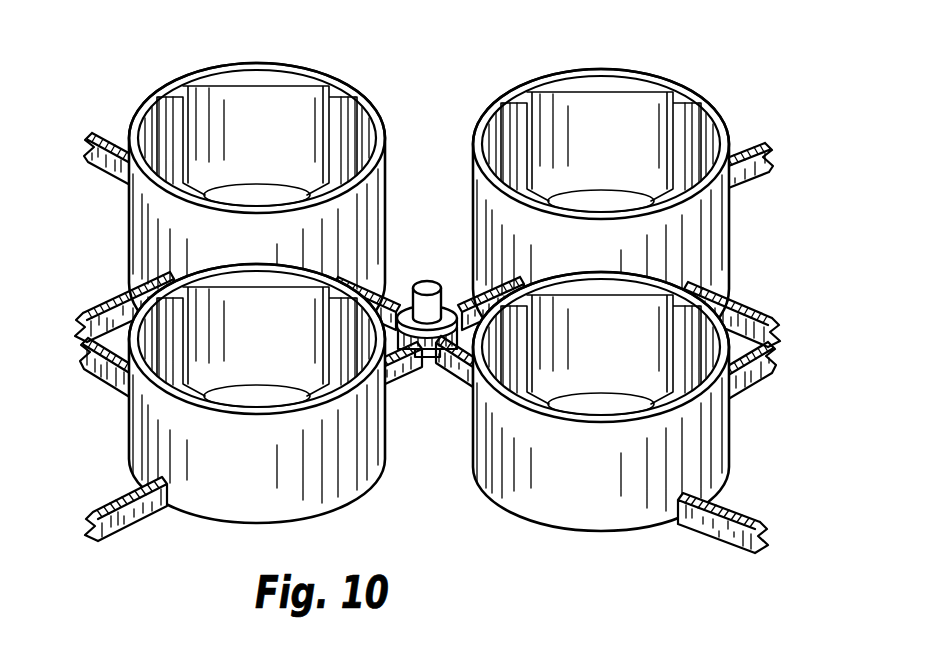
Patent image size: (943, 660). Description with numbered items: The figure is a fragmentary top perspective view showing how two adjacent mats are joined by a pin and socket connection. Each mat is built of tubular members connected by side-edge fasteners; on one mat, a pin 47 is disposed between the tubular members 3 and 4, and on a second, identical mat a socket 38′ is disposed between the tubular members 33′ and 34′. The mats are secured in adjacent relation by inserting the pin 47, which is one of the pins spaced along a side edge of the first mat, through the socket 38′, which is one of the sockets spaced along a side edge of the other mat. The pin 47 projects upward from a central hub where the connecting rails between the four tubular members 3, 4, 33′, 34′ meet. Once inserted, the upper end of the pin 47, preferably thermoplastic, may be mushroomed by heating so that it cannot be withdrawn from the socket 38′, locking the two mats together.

The tubular member 3 is at (128, 435).
The tubular member 4 is at (128, 235).
The tubular member 33′ is at (725, 238).
The tubular member 34′ is at (725, 420).
The socket 38′ is at (430, 350).
The pin 47 is at (428, 285).